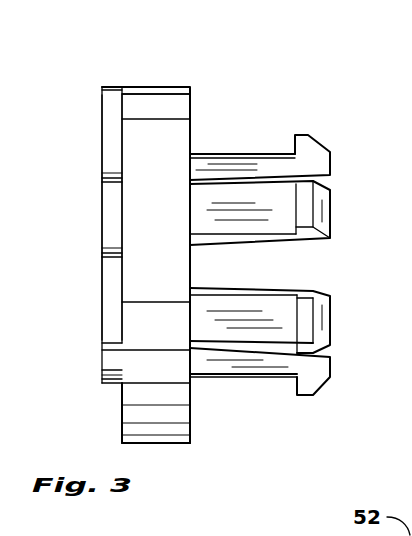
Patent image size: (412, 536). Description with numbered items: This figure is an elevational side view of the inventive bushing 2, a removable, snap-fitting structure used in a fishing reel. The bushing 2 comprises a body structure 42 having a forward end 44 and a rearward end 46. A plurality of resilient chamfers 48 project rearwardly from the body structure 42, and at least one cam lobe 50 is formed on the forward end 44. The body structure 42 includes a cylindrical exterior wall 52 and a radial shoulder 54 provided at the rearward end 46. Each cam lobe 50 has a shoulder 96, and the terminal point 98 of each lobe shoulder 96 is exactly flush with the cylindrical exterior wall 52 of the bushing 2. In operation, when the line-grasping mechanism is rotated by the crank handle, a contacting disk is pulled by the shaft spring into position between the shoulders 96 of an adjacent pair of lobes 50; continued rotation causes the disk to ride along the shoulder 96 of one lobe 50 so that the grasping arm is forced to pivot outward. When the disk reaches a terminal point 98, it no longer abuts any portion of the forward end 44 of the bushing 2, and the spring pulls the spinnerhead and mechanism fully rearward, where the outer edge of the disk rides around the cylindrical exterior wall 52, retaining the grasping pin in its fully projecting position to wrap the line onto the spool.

The bushing 2 is at (283, 120).
The body structure 42 is at (158, 412).
The forward end 44 is at (102, 280).
The rearward end 46 is at (193, 98).
The resilient chamfers 48 is at (313, 148).
The cam lobe 50 is at (102, 132).
The cylindrical exterior wall 52 is at (153, 88).
The radial shoulder 54 is at (190, 441).
The lobe shoulder 96 is at (113, 125).
The terminal point 98 is at (112, 87).